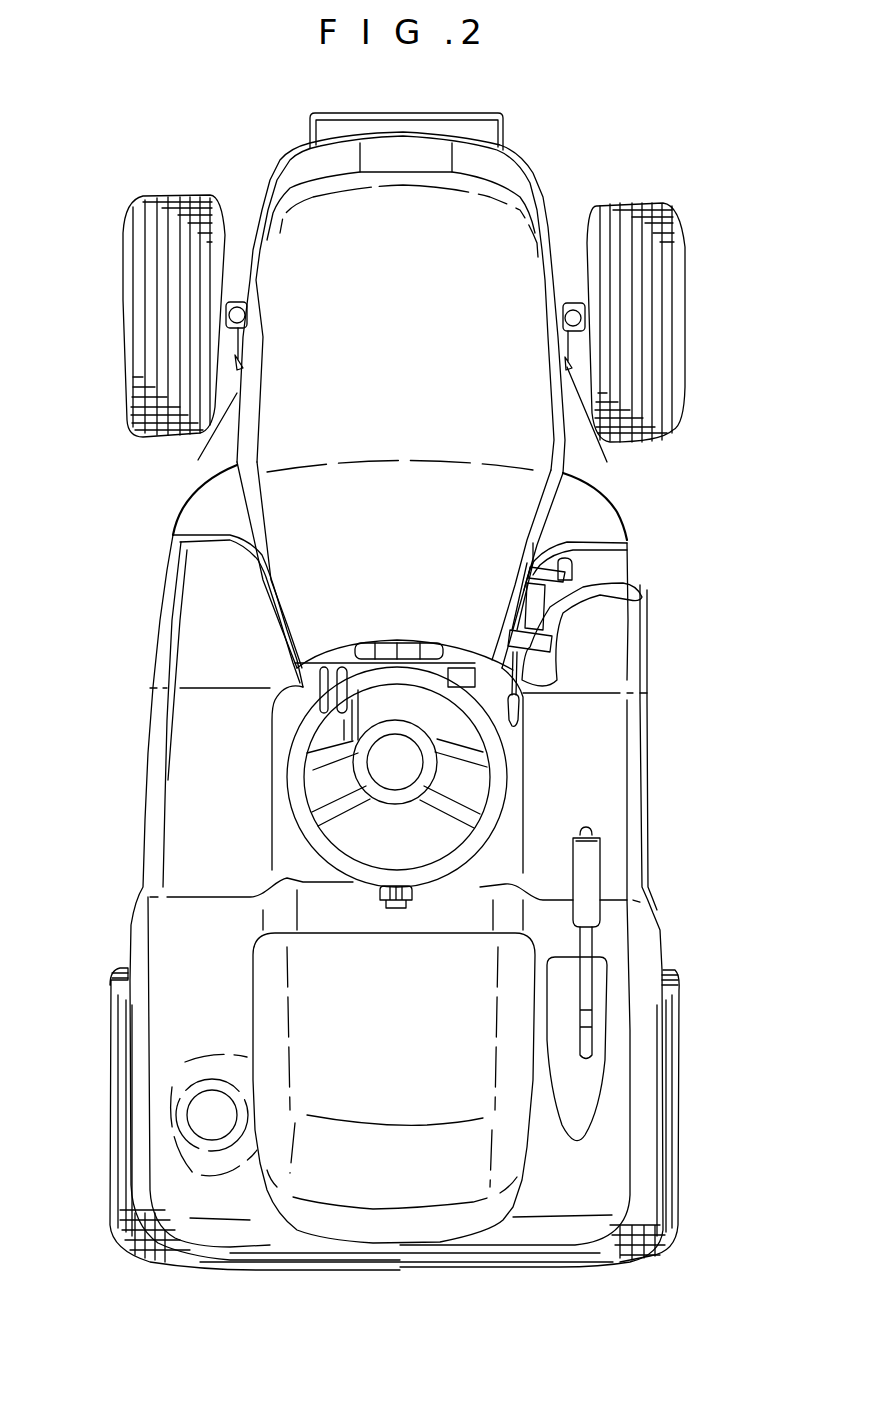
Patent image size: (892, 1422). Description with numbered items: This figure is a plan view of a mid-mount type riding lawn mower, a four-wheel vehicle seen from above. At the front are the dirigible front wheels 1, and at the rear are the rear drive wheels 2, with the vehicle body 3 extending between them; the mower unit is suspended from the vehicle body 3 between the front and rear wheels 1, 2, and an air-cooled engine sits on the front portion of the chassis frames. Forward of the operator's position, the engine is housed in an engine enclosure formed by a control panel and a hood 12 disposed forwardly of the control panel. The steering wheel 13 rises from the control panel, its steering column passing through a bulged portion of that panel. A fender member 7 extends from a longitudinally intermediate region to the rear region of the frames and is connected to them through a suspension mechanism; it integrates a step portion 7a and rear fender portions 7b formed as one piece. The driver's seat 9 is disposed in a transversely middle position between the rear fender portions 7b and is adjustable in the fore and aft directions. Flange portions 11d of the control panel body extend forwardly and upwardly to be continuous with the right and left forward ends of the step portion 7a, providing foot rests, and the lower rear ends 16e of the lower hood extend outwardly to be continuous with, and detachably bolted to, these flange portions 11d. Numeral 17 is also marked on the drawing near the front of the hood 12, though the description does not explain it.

The front wheels 1 is at (132, 222).
The rear drive wheels 2 is at (113, 1150).
The vehicle body 3 is at (125, 662).
The fender member 7 is at (561, 905).
The step portion 7a is at (610, 743).
The rear fender portions 7b is at (632, 960).
The driver's seat 9 is at (267, 1000).
The flange portions 11d is at (213, 507).
The hood 12 is at (503, 228).
The steering wheel 13 is at (290, 777).
The lower rear ends 16e is at (207, 463).
The hood front portion 17 is at (315, 253).